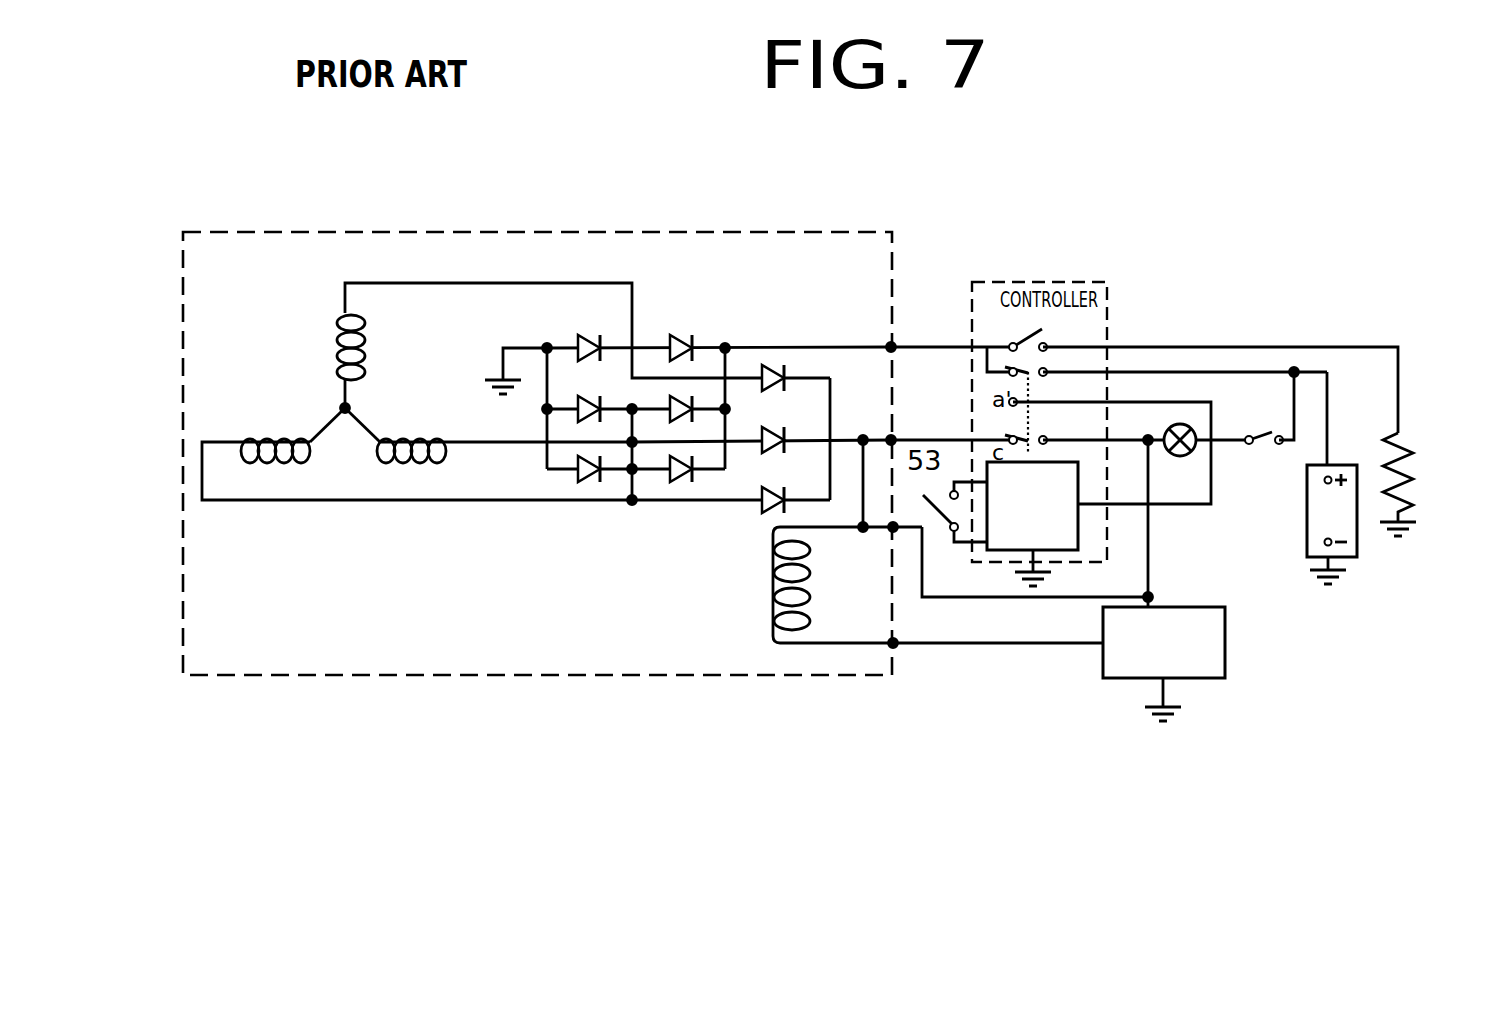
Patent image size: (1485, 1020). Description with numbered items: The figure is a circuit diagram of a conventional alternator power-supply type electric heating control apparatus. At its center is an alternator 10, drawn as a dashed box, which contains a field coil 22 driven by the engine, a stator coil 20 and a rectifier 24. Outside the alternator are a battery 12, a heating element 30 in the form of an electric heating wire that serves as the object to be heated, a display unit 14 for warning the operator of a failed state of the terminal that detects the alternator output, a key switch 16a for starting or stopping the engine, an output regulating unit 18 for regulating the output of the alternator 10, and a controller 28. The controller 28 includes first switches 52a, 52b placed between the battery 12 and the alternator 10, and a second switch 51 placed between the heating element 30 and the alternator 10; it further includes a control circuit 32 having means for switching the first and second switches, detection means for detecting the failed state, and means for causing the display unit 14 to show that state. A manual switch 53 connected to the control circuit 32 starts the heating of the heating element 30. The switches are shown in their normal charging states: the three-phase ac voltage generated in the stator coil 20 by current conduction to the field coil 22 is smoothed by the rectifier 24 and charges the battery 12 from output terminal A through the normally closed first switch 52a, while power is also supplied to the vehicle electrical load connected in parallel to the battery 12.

The alternator 10 is at (349, 233).
The stator coil 20 is at (412, 430).
The rectifier 24 is at (651, 331).
The controller 28 is at (950, 351).
The field coil 22 is at (771, 592).
The second switch 51 is at (1020, 337).
The first switch 52a is at (1044, 357).
The first switch 52b is at (1052, 410).
The manual switch 53 is at (942, 512).
The control circuit 32 is at (1085, 565).
The display unit 14 is at (1180, 457).
The key switch 16a is at (1265, 430).
The battery 12 is at (1307, 532).
The heating element 30 is at (1418, 484).
The output regulating unit 18 is at (1226, 650).